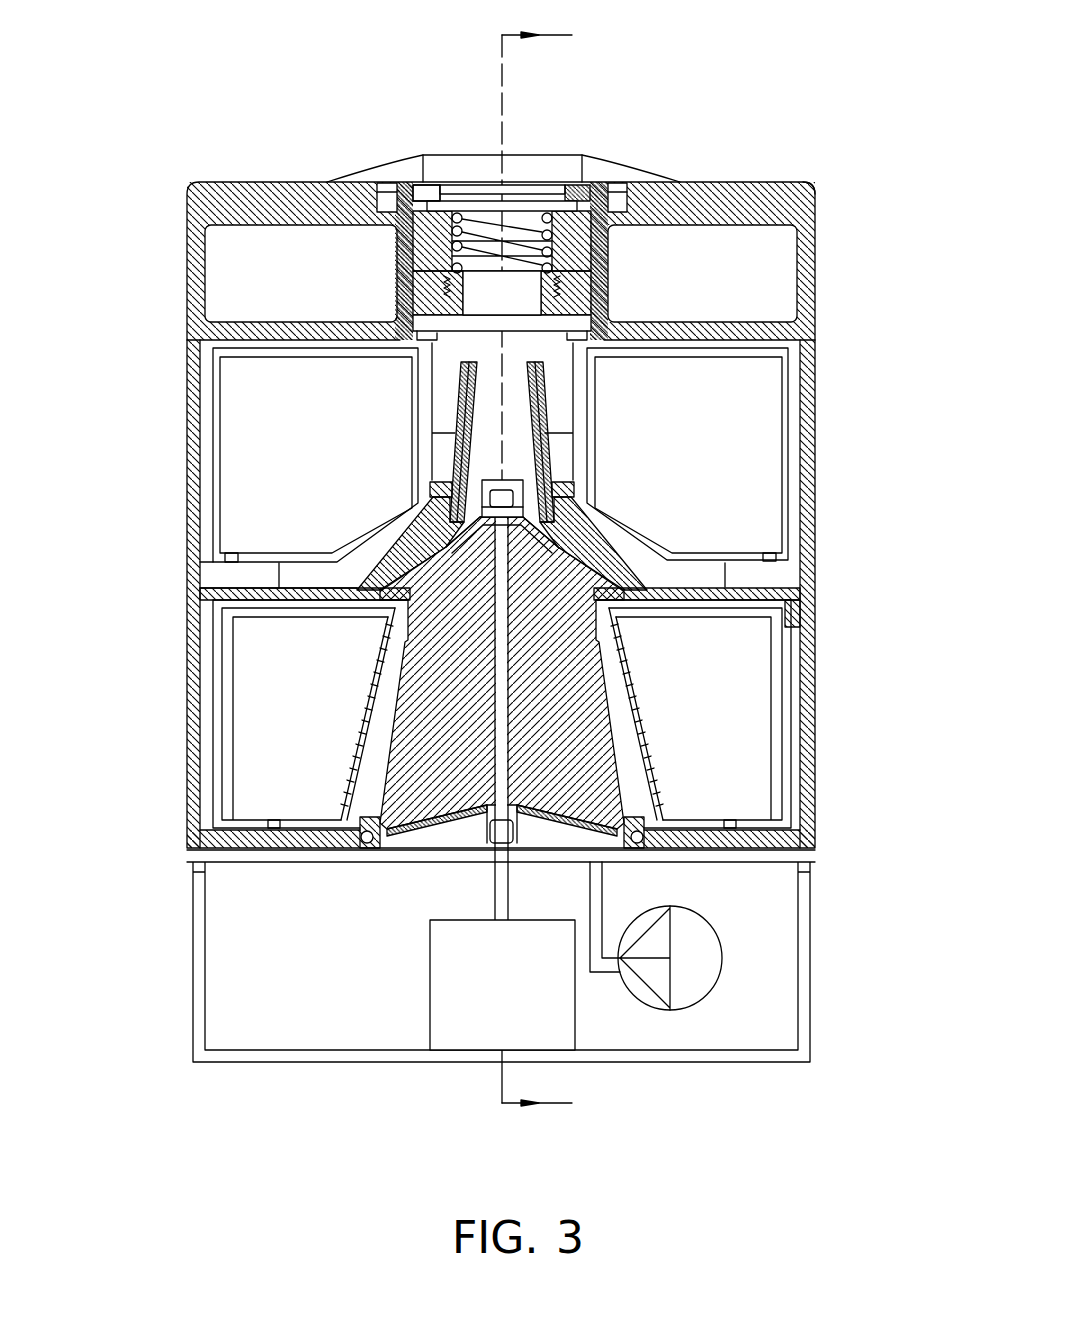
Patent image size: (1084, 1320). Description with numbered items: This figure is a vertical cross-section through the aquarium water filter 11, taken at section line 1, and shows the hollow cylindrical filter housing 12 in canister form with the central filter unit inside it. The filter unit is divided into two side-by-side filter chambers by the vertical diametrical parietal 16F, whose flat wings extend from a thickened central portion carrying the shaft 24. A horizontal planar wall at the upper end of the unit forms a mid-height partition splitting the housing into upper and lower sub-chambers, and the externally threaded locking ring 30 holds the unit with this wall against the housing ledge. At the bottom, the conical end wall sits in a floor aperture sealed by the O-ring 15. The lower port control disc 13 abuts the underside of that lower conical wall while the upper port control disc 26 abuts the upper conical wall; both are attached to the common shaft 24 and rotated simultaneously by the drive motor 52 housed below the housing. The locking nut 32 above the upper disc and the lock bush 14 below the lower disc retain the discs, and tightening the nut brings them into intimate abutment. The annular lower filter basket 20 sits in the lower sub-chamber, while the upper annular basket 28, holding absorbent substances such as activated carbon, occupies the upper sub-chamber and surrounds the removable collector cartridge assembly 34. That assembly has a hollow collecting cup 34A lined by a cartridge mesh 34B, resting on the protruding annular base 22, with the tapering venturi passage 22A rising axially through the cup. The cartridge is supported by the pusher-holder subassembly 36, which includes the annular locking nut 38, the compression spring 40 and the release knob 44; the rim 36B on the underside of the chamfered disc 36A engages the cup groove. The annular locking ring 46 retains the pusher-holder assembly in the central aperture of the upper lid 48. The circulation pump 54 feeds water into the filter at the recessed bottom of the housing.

The section line 1 is at (519, 583).
The aquarium water filter 11 is at (888, 799).
The filter housing 12 is at (187, 462).
The lower port control disc 13 is at (475, 818).
The lock bush 14 is at (518, 830).
The O-ring 15 is at (658, 812).
The parietal 16F is at (402, 680).
The lower filter basket 20 is at (716, 678).
The protruding annular base 22 is at (630, 567).
The venturi passage 22A is at (502, 595).
The shaft 24 is at (580, 523).
The upper port control disc 26 is at (477, 520).
The upper annular basket 28 is at (299, 447).
The locking ring 30 is at (258, 577).
The locking nut 32 is at (520, 480).
The collector cartridge assembly 34 is at (460, 388).
The hollow collecting cup 34A is at (433, 463).
The cartridge mesh 34B is at (575, 393).
The pusher-holder subassembly 36 is at (510, 287).
The chamfered disc 36A is at (398, 307).
The rim 36B is at (382, 320).
The annular locking nut 38 is at (562, 288).
The compression spring 40 is at (478, 218).
The release knob 44 is at (553, 183).
The annular locking ring 46 is at (620, 165).
The upper lid 48 is at (802, 182).
The drive motor 52 is at (428, 985).
The circulation pump 54 is at (720, 977).